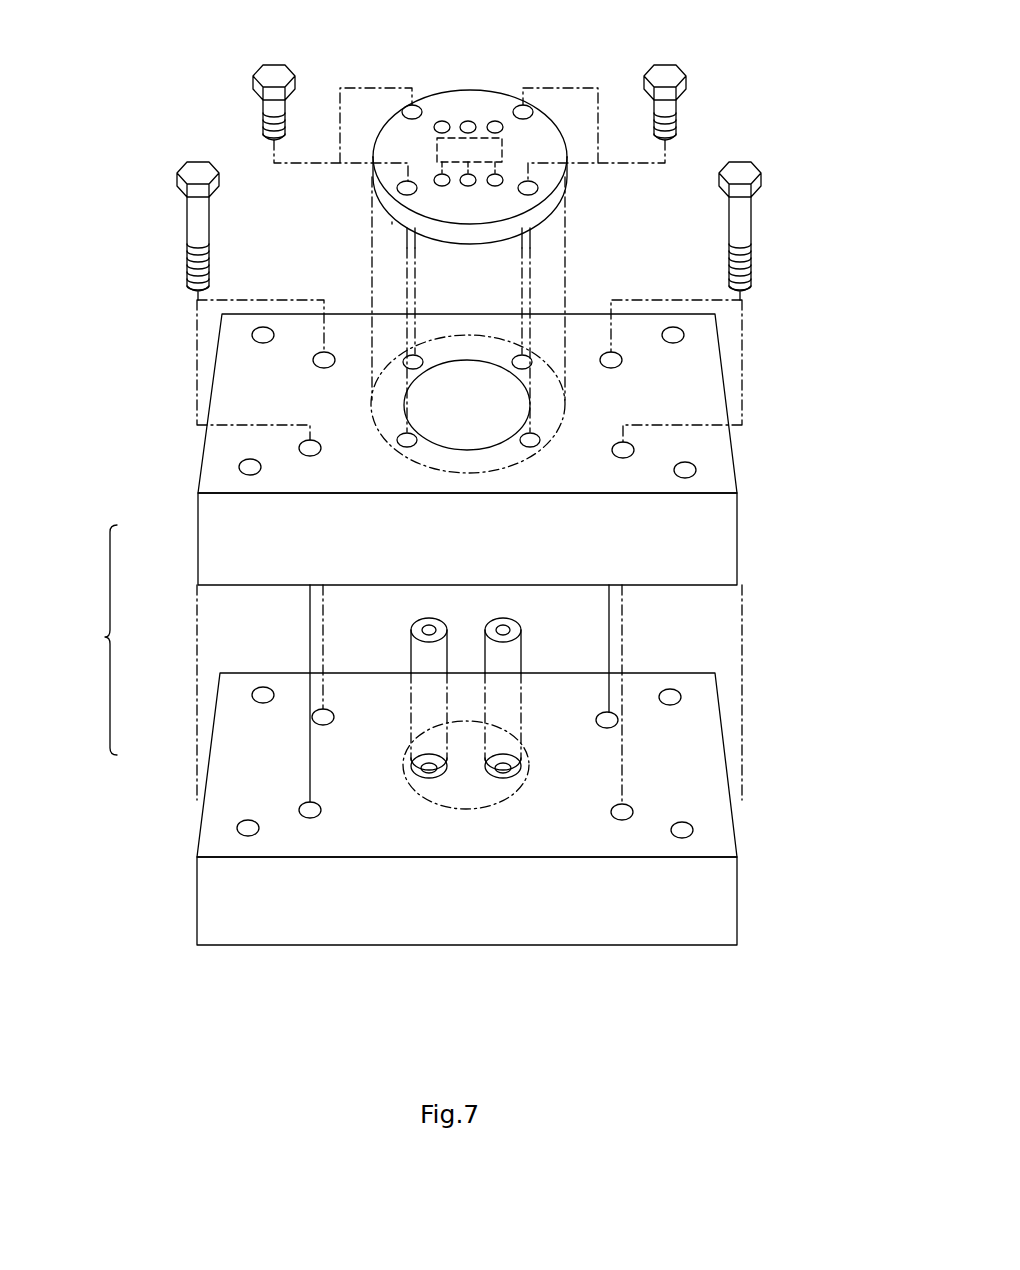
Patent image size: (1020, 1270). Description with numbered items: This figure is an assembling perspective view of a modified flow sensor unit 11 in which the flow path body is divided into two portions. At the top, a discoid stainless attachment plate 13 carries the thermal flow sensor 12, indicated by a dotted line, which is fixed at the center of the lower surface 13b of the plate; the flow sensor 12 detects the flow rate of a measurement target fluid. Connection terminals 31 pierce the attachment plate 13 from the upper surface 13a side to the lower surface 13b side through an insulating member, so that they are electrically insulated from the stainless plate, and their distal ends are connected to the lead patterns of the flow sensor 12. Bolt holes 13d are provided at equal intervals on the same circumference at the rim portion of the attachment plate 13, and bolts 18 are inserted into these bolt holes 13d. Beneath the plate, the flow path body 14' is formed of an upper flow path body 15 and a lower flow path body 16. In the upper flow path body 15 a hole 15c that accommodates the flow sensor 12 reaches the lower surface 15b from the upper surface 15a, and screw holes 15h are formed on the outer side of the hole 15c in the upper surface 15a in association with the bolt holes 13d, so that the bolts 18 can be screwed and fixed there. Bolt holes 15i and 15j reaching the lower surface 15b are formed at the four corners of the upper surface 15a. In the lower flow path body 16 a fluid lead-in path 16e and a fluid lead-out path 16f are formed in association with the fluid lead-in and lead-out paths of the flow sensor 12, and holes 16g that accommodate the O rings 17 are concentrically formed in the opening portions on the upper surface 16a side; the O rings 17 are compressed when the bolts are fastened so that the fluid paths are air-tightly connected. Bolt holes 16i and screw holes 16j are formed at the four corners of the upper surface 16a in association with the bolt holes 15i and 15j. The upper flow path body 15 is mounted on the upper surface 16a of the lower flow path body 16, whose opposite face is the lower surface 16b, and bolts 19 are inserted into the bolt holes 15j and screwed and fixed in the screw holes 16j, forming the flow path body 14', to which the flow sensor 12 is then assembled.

The flow sensor unit 11 is at (708, 66).
The thermal flow sensor 12 is at (428, 90).
The attachment plate 13 is at (370, 209).
The upper surface 13a is at (497, 93).
The lower surface 13b is at (395, 222).
The bolt holes 13d is at (402, 111).
The connection terminals 31 is at (495, 120).
The flow path body 14' is at (94, 640).
The upper flow path body 15 is at (194, 542).
The upper surface 15a is at (340, 330).
The lower surface 15b is at (223, 588).
The hole 15c is at (468, 383).
The screw holes 15h is at (415, 356).
The bolt holes 15i is at (272, 326).
The bolt holes 15j is at (314, 360).
The lower flow path body 16 is at (206, 738).
The upper surface 16a is at (290, 688).
The lower surface of lower mold 16b is at (300, 947).
The fluid lead-in path 16e is at (430, 752).
The fluid lead-out path 16f is at (507, 752).
The holes 16g is at (426, 765).
The bolt holes 16i is at (254, 690).
The screw holes 16j is at (327, 712).
The O rings 17 is at (430, 618).
The bolts 18 is at (265, 124).
The bolts 19 is at (190, 255).